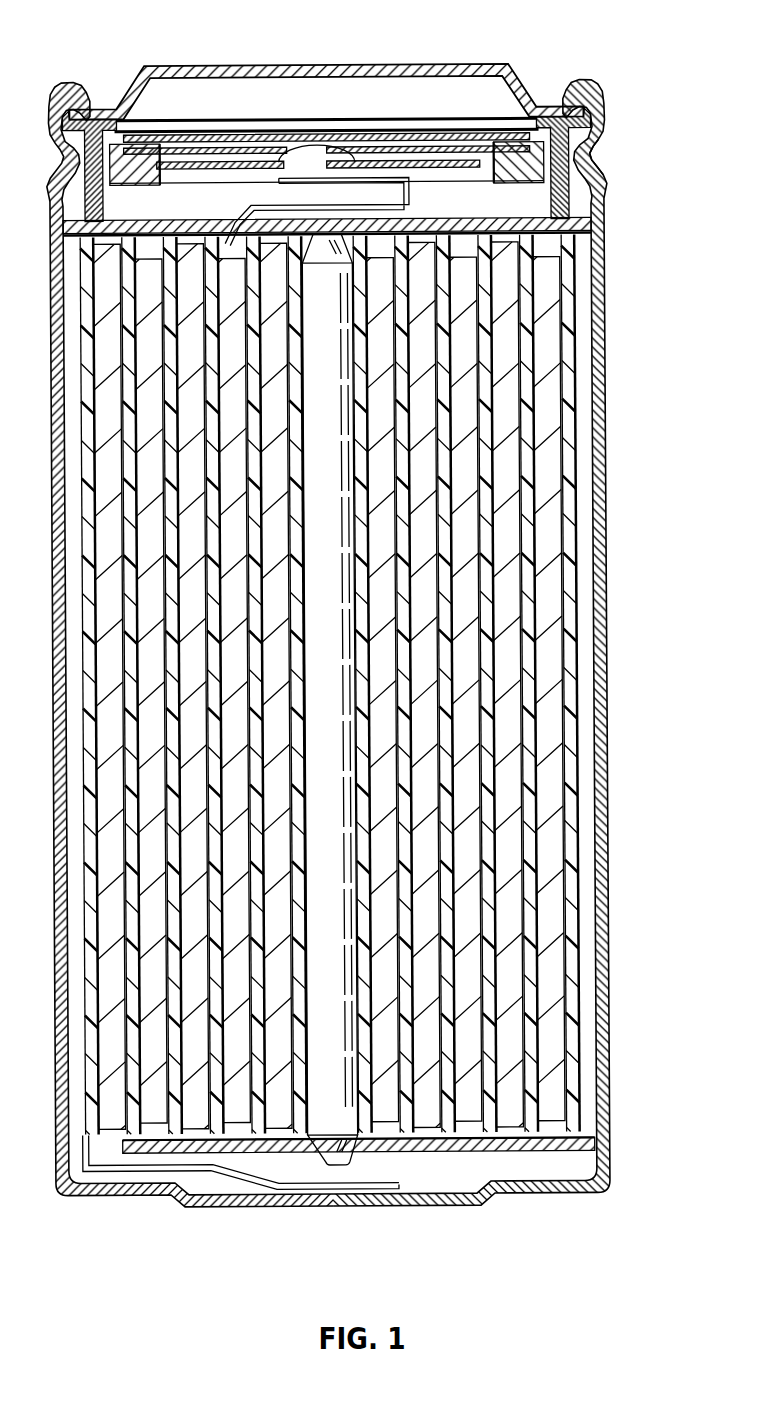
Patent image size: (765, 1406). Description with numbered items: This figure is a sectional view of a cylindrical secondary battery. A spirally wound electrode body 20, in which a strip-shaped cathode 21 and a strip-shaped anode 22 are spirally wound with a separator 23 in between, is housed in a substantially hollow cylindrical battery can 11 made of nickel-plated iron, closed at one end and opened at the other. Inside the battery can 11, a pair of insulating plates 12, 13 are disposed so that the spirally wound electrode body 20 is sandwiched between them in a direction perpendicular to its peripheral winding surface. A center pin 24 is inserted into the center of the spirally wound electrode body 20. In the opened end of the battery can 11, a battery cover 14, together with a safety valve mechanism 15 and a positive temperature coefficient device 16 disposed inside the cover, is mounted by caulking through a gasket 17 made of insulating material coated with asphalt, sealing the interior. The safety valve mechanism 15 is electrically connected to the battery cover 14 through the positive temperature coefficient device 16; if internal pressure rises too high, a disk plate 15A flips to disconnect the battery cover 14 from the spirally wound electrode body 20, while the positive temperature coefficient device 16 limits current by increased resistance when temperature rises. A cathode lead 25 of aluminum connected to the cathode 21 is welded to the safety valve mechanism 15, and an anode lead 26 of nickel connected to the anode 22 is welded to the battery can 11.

The battery can 11 is at (606, 290).
The insulating plate 12 is at (593, 228).
The insulating plate 13 is at (610, 1148).
The battery cover 14 is at (294, 65).
The safety valve mechanism 15 is at (463, 130).
The disk plate 15A is at (420, 147).
The positive temperature coefficient device 16 is at (580, 118).
The gasket 17 is at (596, 184).
The spirally wound electrode body 20 is at (376, 684).
The cathode 21 is at (510, 513).
The anode 22 is at (547, 578).
The separator 23 is at (527, 653).
The center pin 24 is at (325, 705).
The cathode lead 25 is at (293, 173).
The anode lead 26 is at (223, 1177).